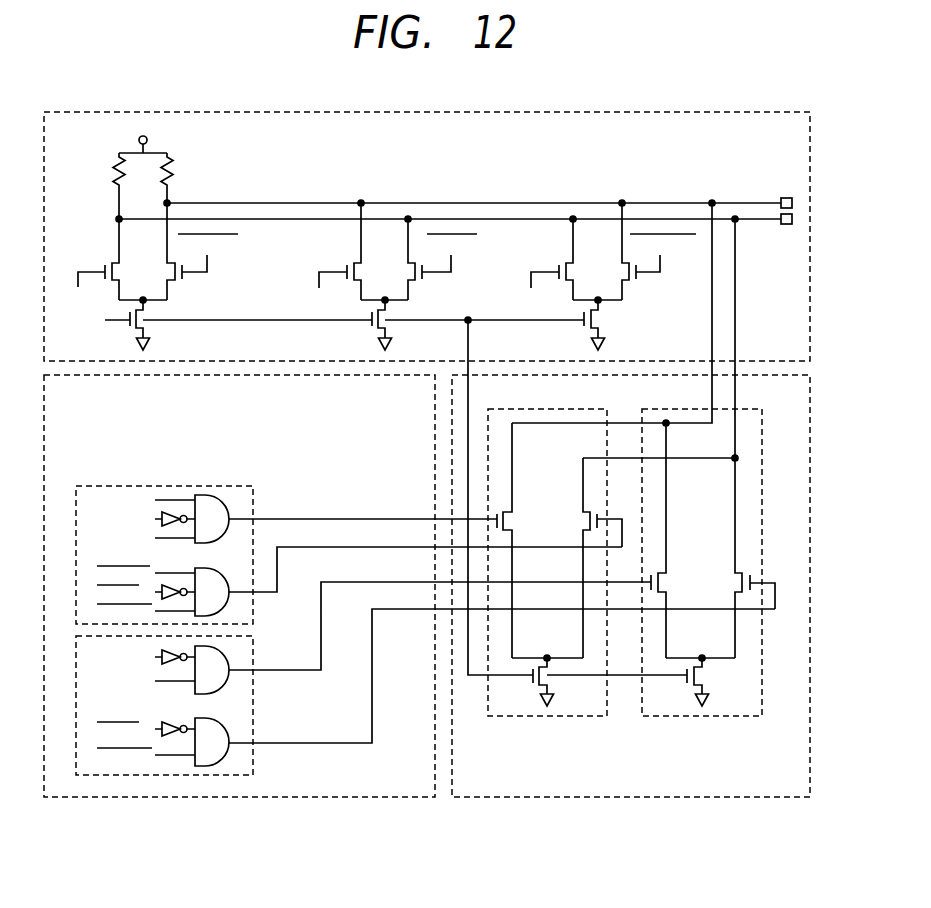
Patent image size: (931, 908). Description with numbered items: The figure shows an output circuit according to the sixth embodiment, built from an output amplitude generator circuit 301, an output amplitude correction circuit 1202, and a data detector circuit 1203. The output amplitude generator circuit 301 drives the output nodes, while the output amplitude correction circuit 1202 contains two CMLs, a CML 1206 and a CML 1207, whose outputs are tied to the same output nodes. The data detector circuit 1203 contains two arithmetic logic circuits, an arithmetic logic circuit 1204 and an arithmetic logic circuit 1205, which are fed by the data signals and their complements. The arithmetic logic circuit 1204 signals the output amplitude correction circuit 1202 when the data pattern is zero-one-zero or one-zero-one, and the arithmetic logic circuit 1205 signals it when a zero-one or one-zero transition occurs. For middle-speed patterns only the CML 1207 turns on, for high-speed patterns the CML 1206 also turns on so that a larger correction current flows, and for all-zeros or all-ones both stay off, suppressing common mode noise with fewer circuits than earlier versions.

The output amplitude generator circuit 301 is at (623, 112).
The output amplitude correction circuit 1202 is at (622, 798).
The data detector circuit 1203 is at (245, 797).
The arithmetic logic circuit 1204 is at (164, 486).
The arithmetic logic circuit 1205 is at (253, 766).
The CML 1206 is at (545, 718).
The CML 1207 is at (705, 718).